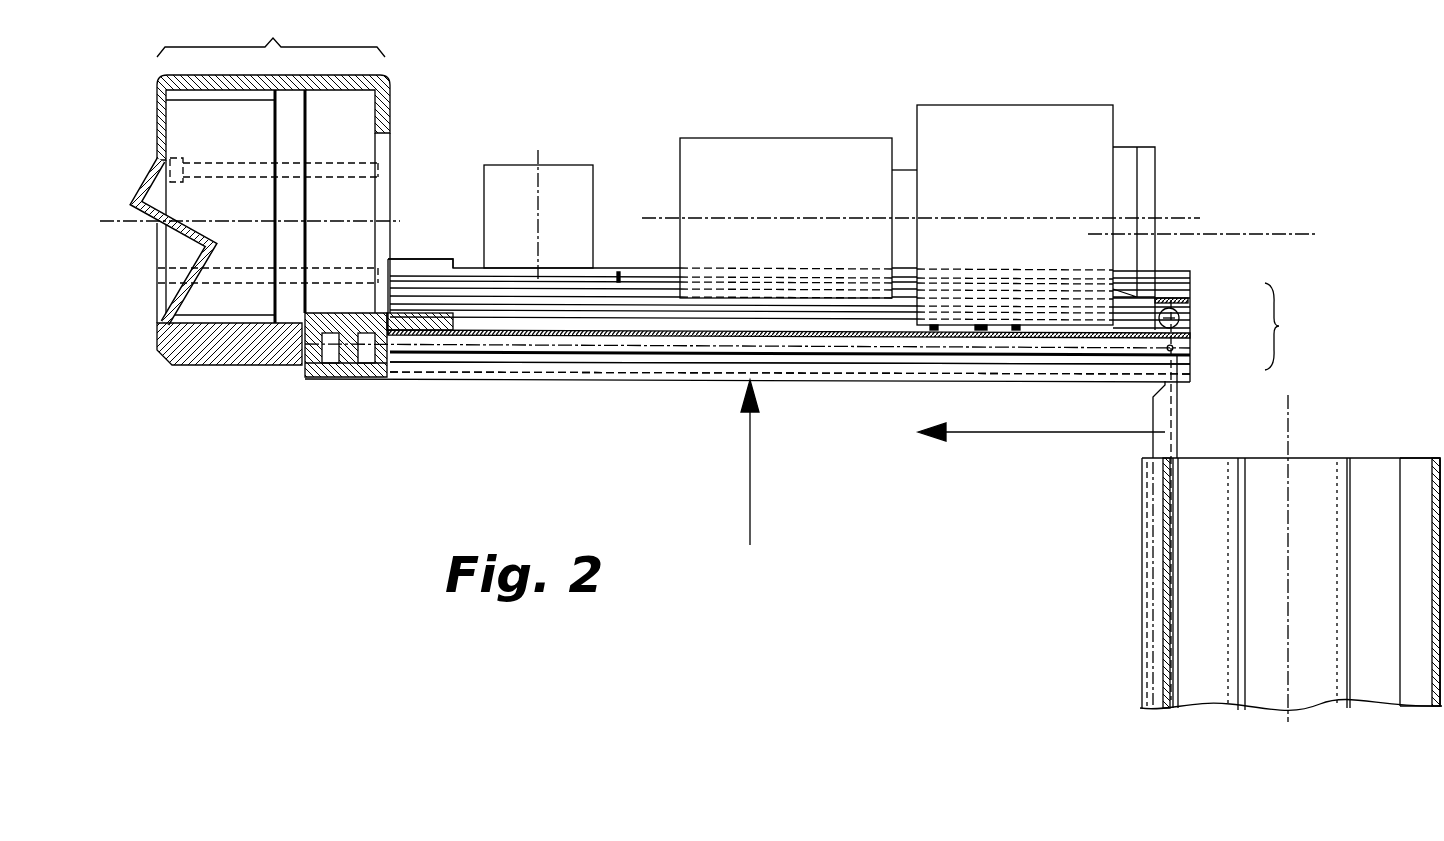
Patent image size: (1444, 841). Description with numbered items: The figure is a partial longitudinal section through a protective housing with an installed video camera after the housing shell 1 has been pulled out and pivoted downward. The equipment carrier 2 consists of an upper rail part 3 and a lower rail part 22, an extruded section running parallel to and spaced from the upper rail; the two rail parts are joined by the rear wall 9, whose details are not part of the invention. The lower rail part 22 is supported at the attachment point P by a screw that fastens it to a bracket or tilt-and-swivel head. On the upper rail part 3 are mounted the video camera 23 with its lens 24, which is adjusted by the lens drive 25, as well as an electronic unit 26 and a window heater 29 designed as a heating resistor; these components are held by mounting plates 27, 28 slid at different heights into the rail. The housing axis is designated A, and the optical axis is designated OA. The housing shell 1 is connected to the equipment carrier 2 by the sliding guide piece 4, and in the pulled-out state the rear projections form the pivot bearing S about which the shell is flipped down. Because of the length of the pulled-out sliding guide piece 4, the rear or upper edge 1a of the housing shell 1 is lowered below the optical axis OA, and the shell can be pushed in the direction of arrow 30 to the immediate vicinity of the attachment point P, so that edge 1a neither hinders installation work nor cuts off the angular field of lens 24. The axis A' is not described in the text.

The housing shell 1 is at (1191, 700).
The rear or upper edge of housing shell 1a is at (1418, 446).
The equipment carrier 2 is at (1303, 343).
The upper rail part 3 is at (625, 258).
The sliding guide piece 4 is at (1164, 410).
The rear wall 9 is at (263, 31).
The lower rail part 22 is at (536, 370).
The video camera 23 is at (779, 150).
The lens 24 is at (1151, 163).
The lens drive 25 is at (1012, 120).
The electronic unit 26 is at (506, 175).
The mounting plate 27 is at (995, 336).
The mounting plate 28 is at (471, 276).
The window heater 29 is at (1182, 312).
The arrow 30 is at (1052, 434).
The pivot bearing S is at (1175, 347).
The attachment point P is at (751, 456).
The housing axis A is at (704, 230).
The optical axis OA is at (1182, 218).
The axis A' is at (1311, 589).